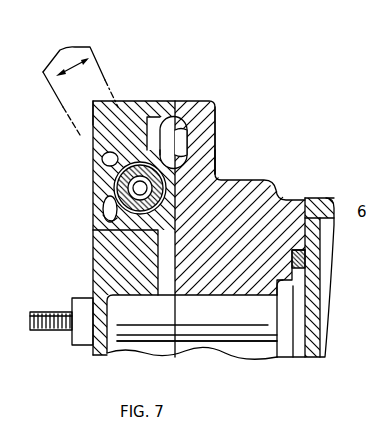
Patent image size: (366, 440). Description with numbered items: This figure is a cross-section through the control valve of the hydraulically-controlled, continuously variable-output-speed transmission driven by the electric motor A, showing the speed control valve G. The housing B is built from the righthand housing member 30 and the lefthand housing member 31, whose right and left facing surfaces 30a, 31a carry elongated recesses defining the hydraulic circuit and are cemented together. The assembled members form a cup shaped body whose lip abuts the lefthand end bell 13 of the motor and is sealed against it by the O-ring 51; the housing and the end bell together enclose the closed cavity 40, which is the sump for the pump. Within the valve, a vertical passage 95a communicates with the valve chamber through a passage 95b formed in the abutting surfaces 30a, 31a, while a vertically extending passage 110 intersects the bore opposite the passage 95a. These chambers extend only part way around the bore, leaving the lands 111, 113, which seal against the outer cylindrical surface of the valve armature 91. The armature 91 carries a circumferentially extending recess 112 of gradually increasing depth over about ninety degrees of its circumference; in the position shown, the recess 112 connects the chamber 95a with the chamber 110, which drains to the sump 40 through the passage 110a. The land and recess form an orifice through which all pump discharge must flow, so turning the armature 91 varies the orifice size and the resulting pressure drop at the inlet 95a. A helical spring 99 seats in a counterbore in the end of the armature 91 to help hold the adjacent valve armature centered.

The lefthand housing member 31 is at (107, 80).
The righthand housing member 30 is at (240, 180).
The left facing surface 31a is at (197, 237).
The passage 95b is at (215, 107).
The land 111 is at (215, 162).
The speed control valve G is at (170, 159).
The lefthand end bell 13 is at (322, 197).
The electric motor A is at (332, 194).
The O-ring 51 is at (305, 262).
The passage 110a is at (186, 297).
The closed cavity 40 is at (209, 342).
The right facing surface 30a is at (97, 282).
The helical spring 99 is at (147, 170).
The land 113 is at (114, 188).
The valve armature 91 is at (117, 224).
The vertical passage 95a is at (112, 160).
The circumferentially extending recess 112 is at (104, 208).
The vertically extending passage 110 is at (100, 243).
The housing B is at (88, 114).